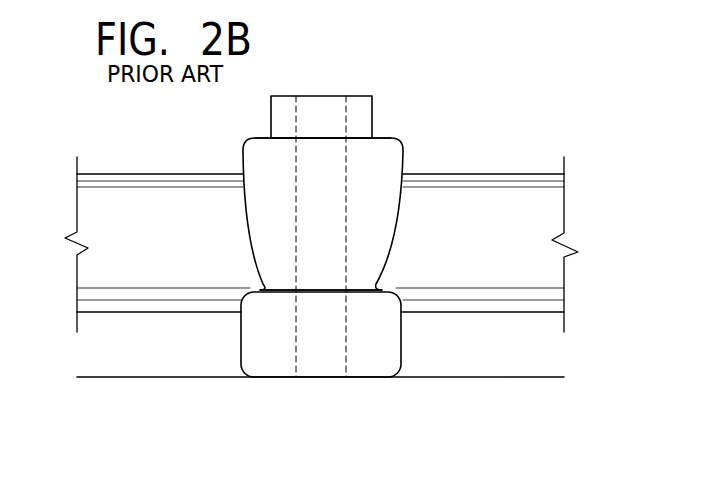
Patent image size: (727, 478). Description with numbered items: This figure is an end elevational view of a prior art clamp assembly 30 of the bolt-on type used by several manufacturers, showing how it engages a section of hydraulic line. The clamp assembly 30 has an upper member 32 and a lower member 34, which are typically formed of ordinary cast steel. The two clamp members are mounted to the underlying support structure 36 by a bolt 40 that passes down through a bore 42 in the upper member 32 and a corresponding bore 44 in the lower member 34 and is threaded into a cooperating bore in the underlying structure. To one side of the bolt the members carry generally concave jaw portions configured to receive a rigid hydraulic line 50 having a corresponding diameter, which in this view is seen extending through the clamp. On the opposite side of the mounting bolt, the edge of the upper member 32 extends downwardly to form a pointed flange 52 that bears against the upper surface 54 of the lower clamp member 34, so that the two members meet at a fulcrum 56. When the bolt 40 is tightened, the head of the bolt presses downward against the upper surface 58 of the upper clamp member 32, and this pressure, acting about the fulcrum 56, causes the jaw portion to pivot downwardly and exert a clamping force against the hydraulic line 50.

The clamp assembly 30 is at (407, 128).
The upper member 32 is at (246, 223).
The lower member 34 is at (241, 353).
The support structure 36 is at (524, 377).
The bolt 40 is at (331, 108).
The bore 42 is at (296, 165).
The bore 44 is at (297, 358).
The hydraulic line 50 is at (484, 197).
The pointed flange 52 is at (340, 292).
The upper surface 54 is at (355, 290).
The fulcrum 56 is at (263, 289).
The upper surface 58 is at (283, 137).